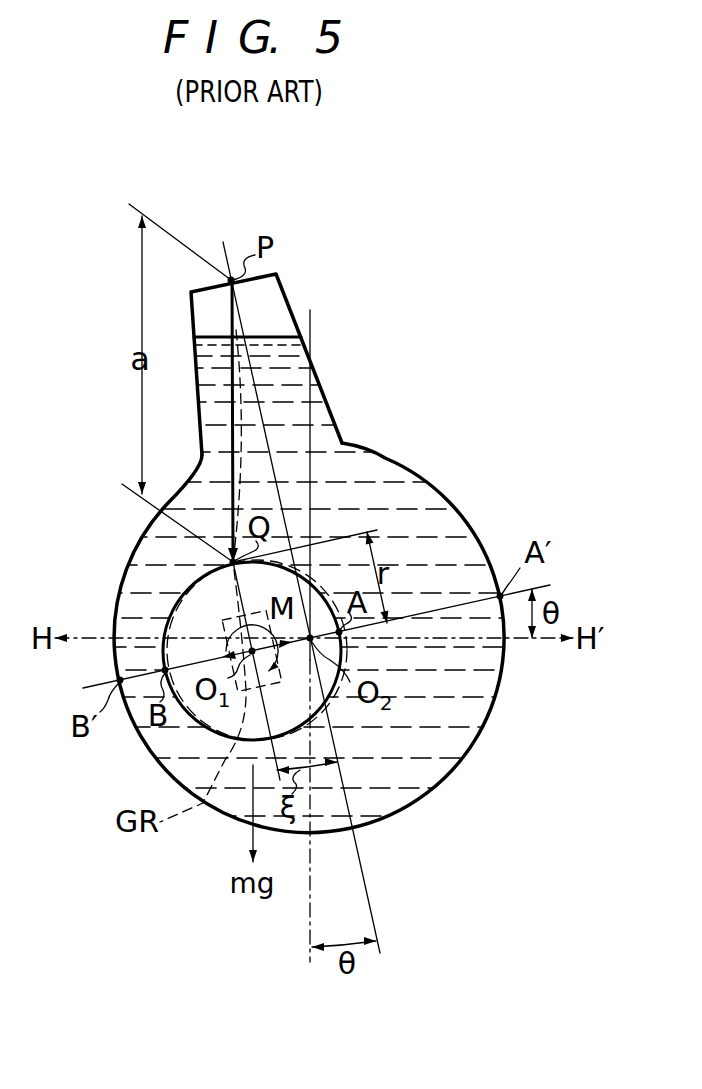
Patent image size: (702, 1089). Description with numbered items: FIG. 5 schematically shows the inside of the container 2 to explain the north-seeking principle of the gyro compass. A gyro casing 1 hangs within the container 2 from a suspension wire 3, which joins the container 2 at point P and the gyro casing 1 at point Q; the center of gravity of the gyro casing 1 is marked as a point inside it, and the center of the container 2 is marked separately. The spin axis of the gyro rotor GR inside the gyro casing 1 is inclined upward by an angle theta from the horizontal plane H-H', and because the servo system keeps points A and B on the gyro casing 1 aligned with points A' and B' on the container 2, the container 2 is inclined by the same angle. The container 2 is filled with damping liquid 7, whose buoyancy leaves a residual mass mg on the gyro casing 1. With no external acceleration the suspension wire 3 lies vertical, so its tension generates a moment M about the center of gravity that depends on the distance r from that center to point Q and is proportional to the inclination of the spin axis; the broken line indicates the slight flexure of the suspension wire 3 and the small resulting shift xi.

The gyro casing 1 is at (186, 588).
The container 2 is at (415, 468).
The suspension wire 3 is at (232, 412).
The damping liquid 7 is at (433, 777).